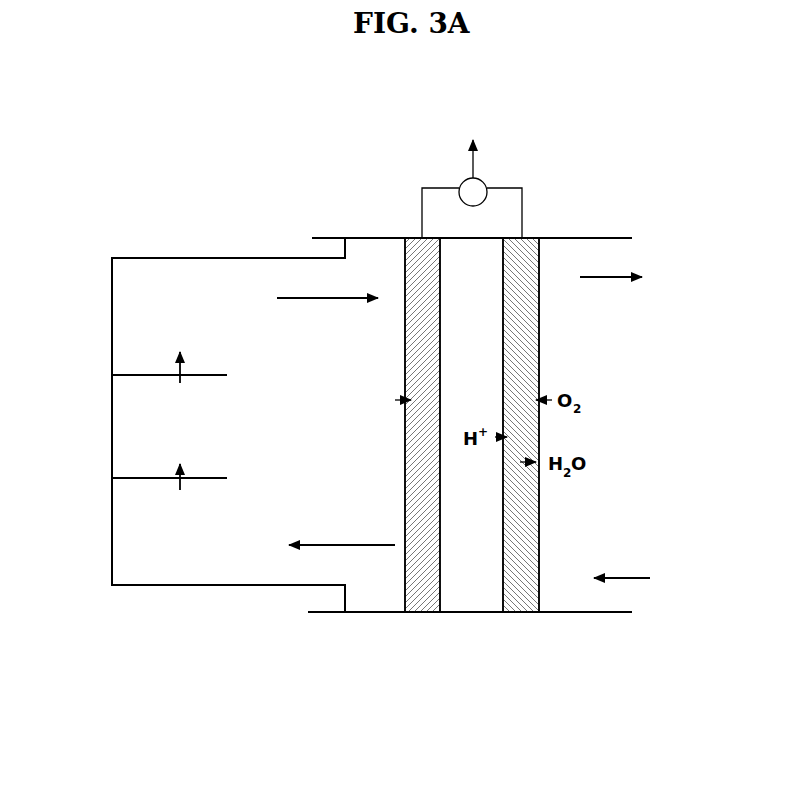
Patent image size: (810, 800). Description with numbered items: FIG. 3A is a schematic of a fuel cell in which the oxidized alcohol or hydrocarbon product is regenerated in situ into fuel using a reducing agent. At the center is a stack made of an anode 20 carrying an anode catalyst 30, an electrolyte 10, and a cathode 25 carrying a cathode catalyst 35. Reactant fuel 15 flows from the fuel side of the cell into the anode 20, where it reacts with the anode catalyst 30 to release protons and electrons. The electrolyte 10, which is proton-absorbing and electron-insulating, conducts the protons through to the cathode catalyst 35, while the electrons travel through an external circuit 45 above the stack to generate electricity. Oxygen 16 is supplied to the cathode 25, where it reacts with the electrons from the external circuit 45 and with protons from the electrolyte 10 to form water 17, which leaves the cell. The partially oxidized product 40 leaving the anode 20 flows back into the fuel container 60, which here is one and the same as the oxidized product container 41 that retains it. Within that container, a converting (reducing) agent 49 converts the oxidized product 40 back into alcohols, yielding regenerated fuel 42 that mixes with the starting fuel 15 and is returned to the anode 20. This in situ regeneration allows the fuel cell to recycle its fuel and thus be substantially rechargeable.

The electrolyte 10 is at (472, 612).
The reactant fuel 15 is at (158, 268).
The oxygen 16 is at (715, 563).
The water 17 is at (735, 298).
The anode 20 is at (422, 612).
The cathode 25 is at (520, 612).
The anode catalyst 30 is at (343, 762).
The cathode catalyst 35 is at (590, 762).
The oxidized product 40 is at (167, 572).
The oxidized product container 41 is at (110, 555).
The regenerated fuel 42 is at (125, 345).
The external circuit 45 is at (412, 202).
The converting (reducing) agent 49 is at (128, 420).
The fuel container 60 is at (105, 287).